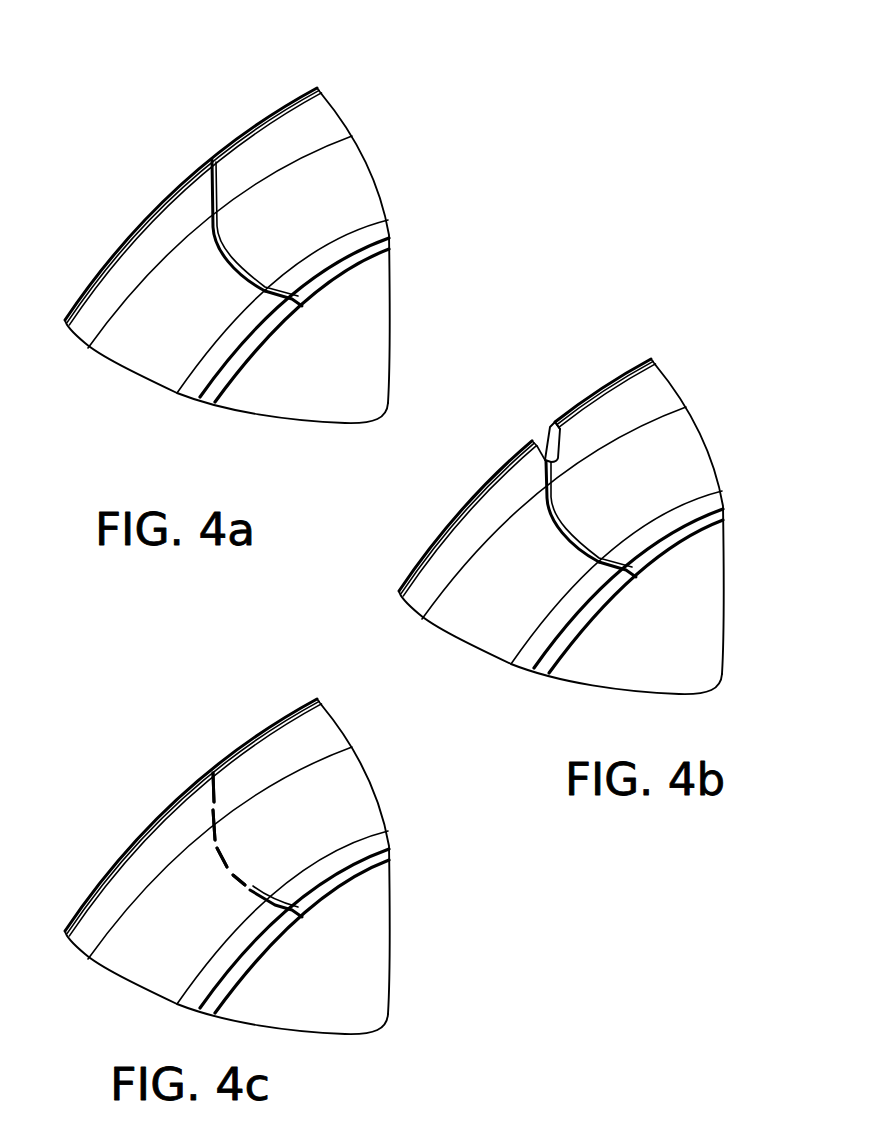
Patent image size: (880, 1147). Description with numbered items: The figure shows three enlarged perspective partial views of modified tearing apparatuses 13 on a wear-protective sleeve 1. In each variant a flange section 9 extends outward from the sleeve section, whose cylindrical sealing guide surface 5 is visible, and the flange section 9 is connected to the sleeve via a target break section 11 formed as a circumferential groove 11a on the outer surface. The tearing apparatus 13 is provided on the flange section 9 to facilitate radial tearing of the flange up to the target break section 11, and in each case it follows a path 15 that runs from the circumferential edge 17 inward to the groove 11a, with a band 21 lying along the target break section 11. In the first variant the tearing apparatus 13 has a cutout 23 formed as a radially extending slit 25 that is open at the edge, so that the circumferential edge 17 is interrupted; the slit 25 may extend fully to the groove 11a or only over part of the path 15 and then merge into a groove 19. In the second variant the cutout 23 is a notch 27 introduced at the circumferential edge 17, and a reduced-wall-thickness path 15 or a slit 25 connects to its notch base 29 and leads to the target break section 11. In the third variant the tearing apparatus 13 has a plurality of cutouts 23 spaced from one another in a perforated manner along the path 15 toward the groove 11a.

In FIG. 4A, the wear-protective sleeve 1 is at (379, 147).
In FIG. 4B, the wear-protective sleeve 1 is at (707, 455).
In FIG. 4C, the wear-protective sleeve 1 is at (373, 832).
In FIG. 4A, the cylindrical sealing guide surface 5 is at (373, 387).
In FIG. 4B, the cylindrical sealing guide surface 5 is at (579, 642).
In FIG. 4C, the cylindrical sealing guide surface 5 is at (248, 982).
In FIG. 4A, the flange section 9 is at (130, 230).
In FIG. 4B, the flange section 9 is at (525, 475).
In FIG. 4C, the flange section 9 is at (191, 815).
In FIG. 4A, the target break section 11 is at (319, 272).
In FIG. 4B, the target break section 11 is at (653, 545).
In FIG. 4C, the target break section 11 is at (319, 883).
In FIG. 4A, the circumferential groove 11a is at (388, 223).
In FIG. 4B, the circumferential groove 11a is at (653, 545).
In FIG. 4C, the circumferential groove 11a is at (319, 883).
In FIG. 4A, the tearing apparatus 13 is at (226, 135).
In FIG. 4B, the tearing apparatus 13 is at (585, 445).
In FIG. 4C, the tearing apparatus 13 is at (246, 780).
In FIG. 4A, the reduced-wall-thickness path 15 is at (254, 272).
In FIG. 4B, the reduced-wall-thickness path 15 is at (628, 524).
In FIG. 4C, the reduced-wall-thickness path 15 is at (281, 847).
In FIG. 4A, the circumferential edge 17 is at (165, 197).
In FIG. 4B, the circumferential edge 17 is at (528, 467).
In FIG. 4C, the circumferential edge 17 is at (194, 809).
In FIG. 4A, the groove 19 is at (240, 257).
In FIG. 4B, the groove 19 is at (554, 460).
In FIG. 4C, the groove 19 is at (220, 804).
In FIG. 4A, the band 21 is at (370, 322).
In FIG. 4B, the band 21 is at (654, 591).
In FIG. 4C, the band 21 is at (322, 931).
In FIG. 4A, the cutout 23 is at (255, 151).
In FIG. 4B, the cutout 23 is at (602, 415).
In FIG. 4C, the cutout 23 is at (211, 776).
In FIG. 4A, the slit 25 is at (212, 157).
In FIG. 4B, the slit 25 is at (609, 504).
In FIG. 4B, the notch 27 is at (573, 363).
In FIG. 4B, the notch base 29 is at (567, 390).